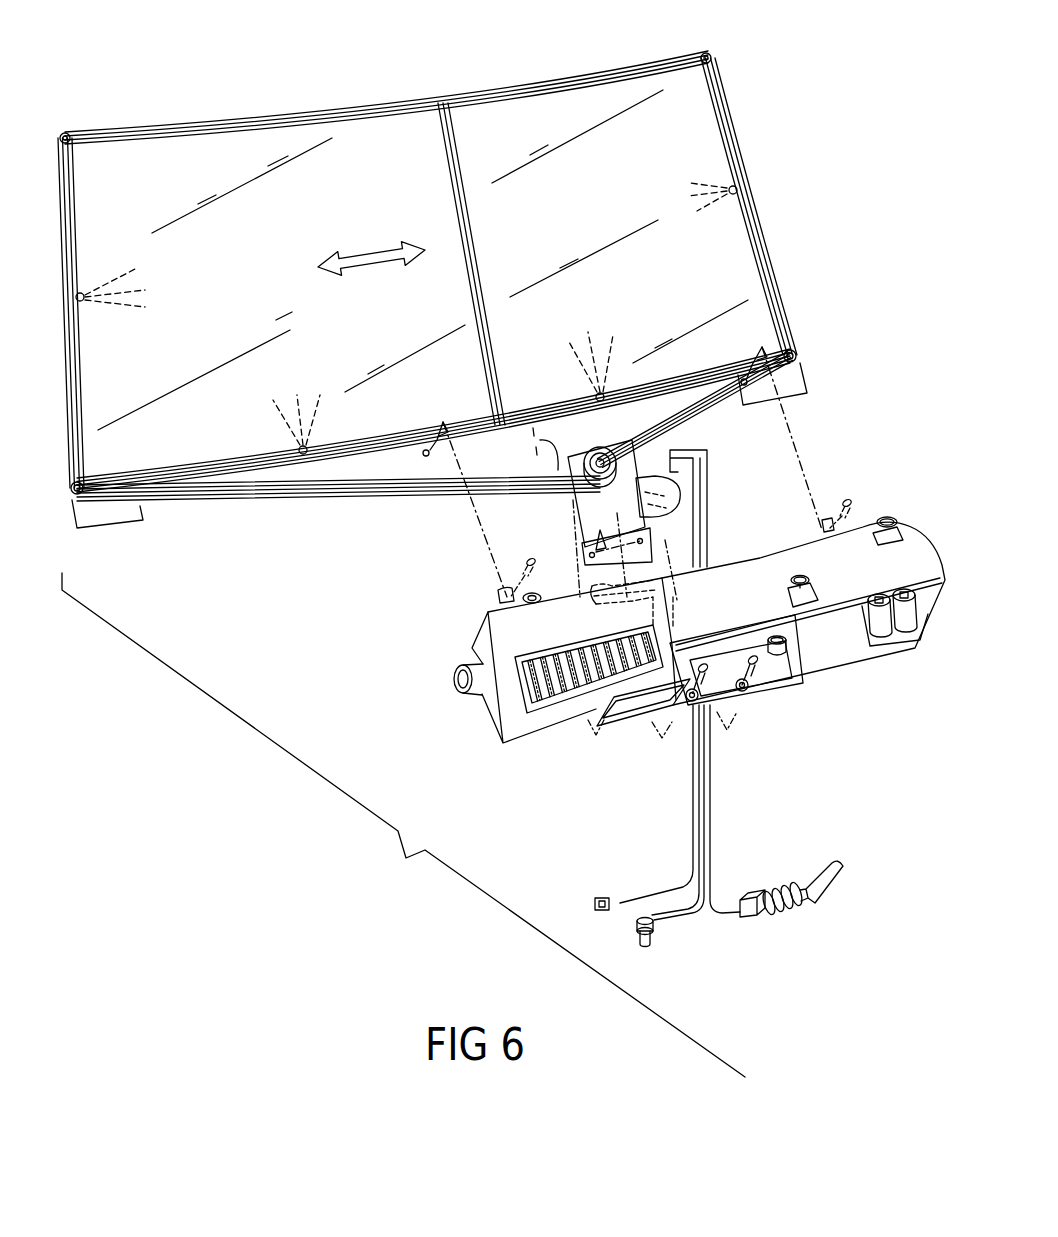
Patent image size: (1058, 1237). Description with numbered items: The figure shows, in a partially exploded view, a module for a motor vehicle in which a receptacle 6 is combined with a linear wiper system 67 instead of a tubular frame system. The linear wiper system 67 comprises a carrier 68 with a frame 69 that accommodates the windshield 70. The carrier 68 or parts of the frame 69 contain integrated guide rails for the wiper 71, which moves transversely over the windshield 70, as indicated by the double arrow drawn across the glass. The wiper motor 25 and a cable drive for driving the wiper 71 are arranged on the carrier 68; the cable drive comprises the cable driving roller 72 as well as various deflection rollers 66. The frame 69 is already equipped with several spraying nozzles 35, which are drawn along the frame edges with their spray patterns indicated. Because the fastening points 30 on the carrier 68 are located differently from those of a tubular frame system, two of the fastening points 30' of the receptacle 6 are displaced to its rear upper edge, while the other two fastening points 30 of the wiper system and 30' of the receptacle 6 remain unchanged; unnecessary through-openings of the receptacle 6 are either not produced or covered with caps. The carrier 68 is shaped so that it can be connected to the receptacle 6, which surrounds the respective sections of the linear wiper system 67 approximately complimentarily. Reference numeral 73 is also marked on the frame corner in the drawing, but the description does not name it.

The receptacle 6 is at (553, 786).
The wiper motor 25 is at (660, 493).
The fastening points 30 is at (603, 453).
The fastening points 30' is at (652, 530).
The spraying nozzles 35 is at (80, 303).
The deflection rollers 66 is at (77, 497).
The linear wiper system 67 is at (312, 574).
The carrier 68 is at (570, 453).
The frame 69 is at (762, 222).
The windshield 70 is at (642, 87).
The wiper 71 is at (450, 130).
The cable driving roller 72 is at (603, 462).
The frame corner joint 73 is at (65, 137).